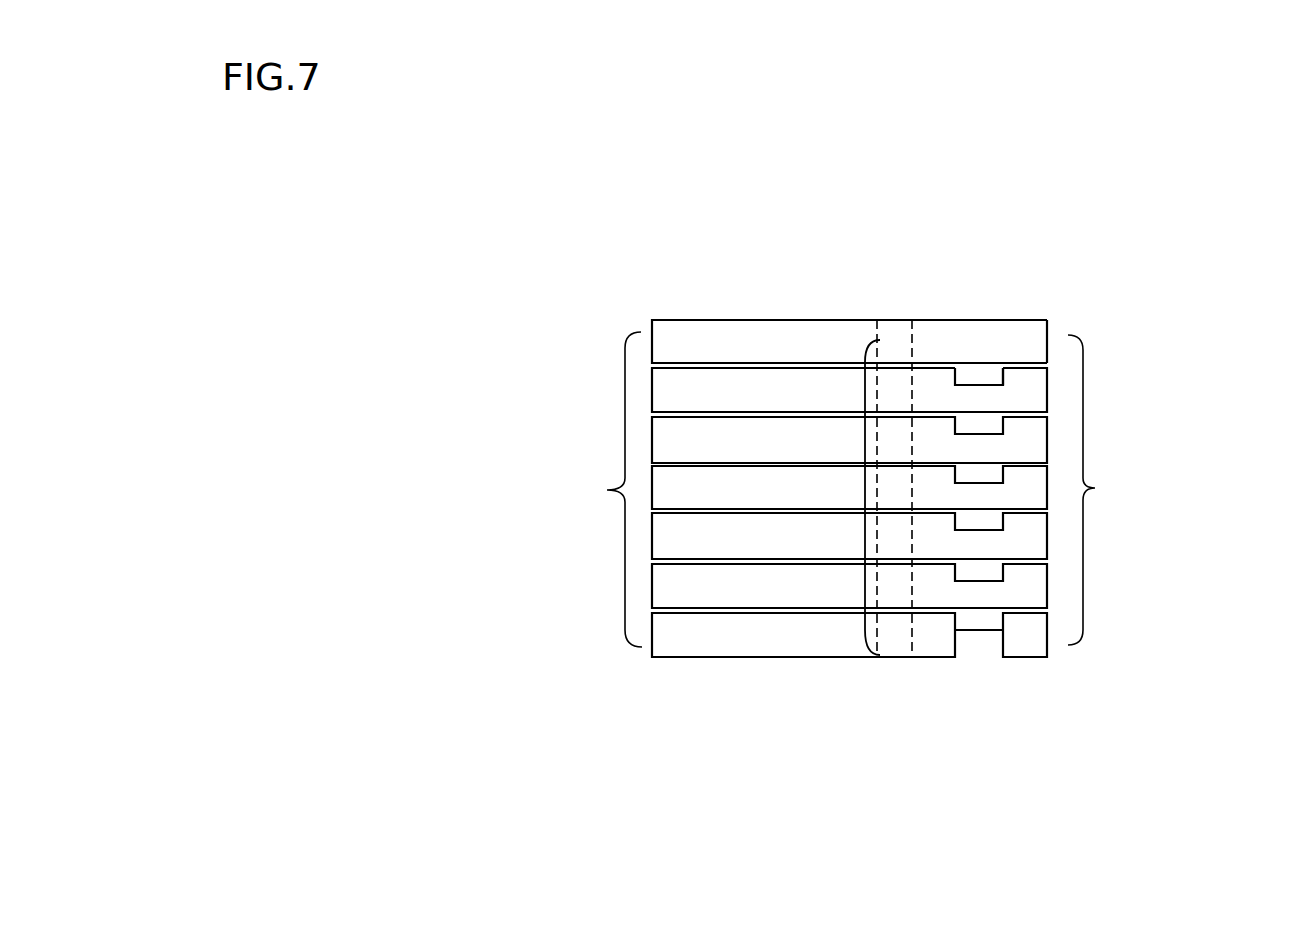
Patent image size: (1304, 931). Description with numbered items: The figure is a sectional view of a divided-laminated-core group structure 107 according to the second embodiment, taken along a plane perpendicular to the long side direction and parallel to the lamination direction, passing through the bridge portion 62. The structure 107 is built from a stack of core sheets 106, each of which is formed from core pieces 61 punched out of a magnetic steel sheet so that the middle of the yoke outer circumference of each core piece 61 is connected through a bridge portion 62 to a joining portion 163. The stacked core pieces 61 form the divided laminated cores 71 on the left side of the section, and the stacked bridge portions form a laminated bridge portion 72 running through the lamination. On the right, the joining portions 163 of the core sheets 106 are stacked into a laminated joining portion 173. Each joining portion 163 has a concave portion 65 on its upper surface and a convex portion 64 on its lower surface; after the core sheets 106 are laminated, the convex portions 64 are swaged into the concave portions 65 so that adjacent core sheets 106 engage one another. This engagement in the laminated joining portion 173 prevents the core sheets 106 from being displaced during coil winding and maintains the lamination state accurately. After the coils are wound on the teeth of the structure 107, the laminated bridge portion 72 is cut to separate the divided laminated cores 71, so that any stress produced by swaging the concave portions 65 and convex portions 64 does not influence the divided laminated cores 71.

The divided-laminated-core group structure 107 is at (617, 310).
The core piece 61 is at (717, 330).
The bridge portion 62 is at (893, 335).
The convex portion 64 is at (962, 370).
The joining portion 163 is at (975, 335).
The concave portion 65 is at (1005, 378).
The core sheet 106 is at (1047, 328).
The divided laminated core 71 is at (598, 489).
The laminated joining portion 173 is at (1122, 490).
The laminated bridge portion 72 is at (865, 510).